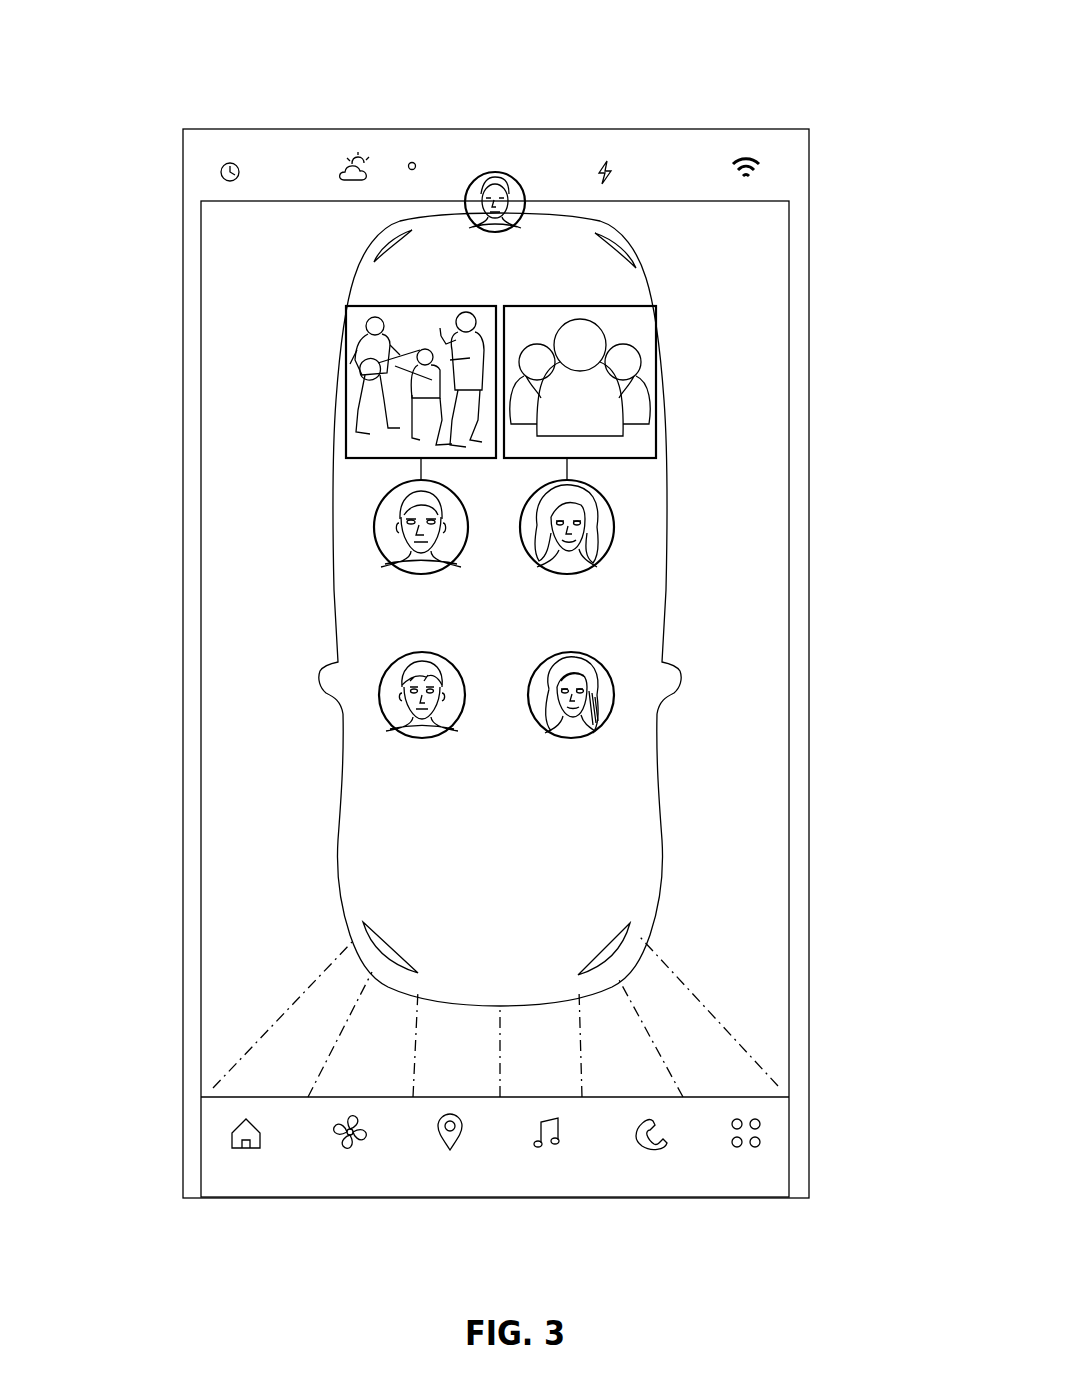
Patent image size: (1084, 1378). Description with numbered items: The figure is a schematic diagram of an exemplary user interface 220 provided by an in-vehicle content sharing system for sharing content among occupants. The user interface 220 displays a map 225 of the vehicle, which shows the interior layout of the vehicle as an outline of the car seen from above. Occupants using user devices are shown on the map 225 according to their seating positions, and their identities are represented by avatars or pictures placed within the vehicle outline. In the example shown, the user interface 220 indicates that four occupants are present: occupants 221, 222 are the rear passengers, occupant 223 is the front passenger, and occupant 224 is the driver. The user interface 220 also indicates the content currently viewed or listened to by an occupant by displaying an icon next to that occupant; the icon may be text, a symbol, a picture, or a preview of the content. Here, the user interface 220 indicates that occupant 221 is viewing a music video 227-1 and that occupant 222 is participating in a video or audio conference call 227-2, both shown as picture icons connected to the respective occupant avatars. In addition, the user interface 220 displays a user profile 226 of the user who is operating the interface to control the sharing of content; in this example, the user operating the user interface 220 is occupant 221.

The user interface 220 is at (479, 27).
The occupant 221 is at (401, 612).
The occupant 222 is at (547, 612).
The occupant 223 is at (402, 773).
The occupant 224 is at (556, 773).
The map 225 is at (662, 855).
The user profile 226 is at (515, 175).
The music video 227-1 is at (346, 379).
The conference call 227-2 is at (655, 395).